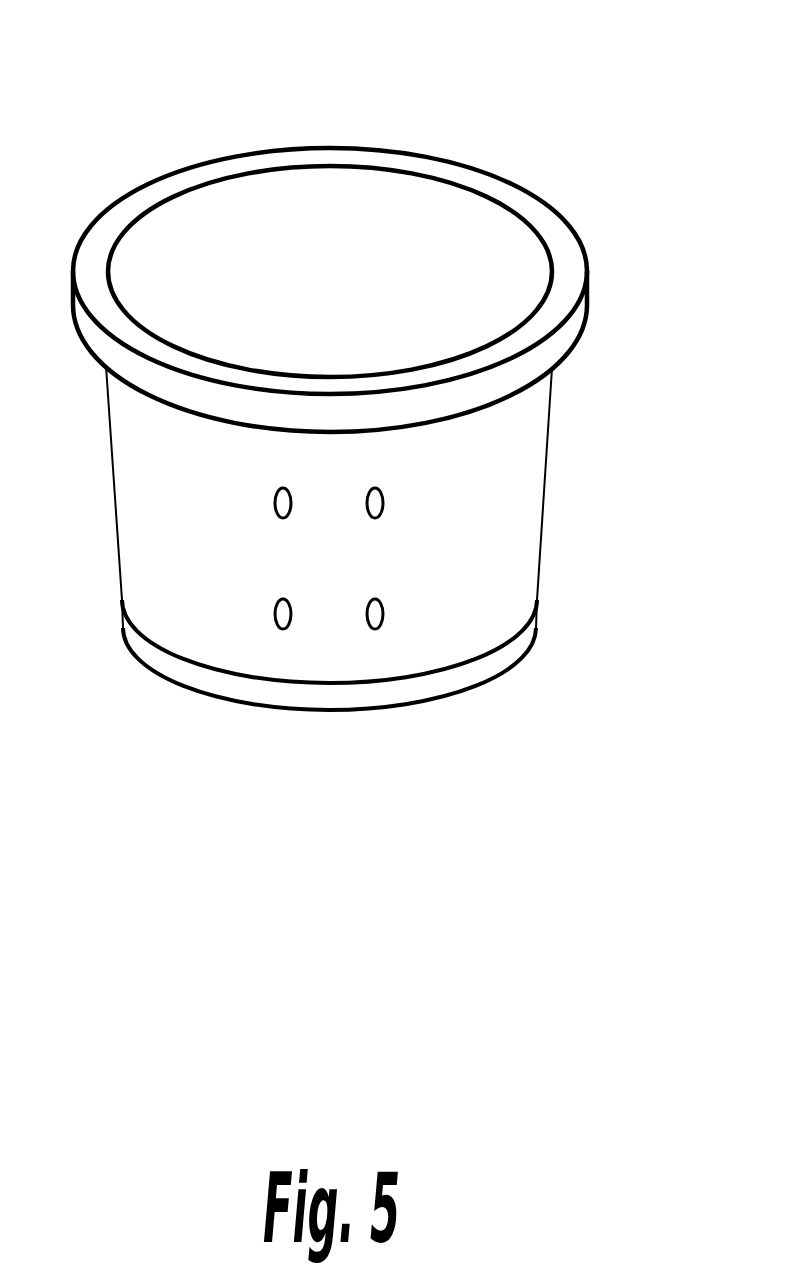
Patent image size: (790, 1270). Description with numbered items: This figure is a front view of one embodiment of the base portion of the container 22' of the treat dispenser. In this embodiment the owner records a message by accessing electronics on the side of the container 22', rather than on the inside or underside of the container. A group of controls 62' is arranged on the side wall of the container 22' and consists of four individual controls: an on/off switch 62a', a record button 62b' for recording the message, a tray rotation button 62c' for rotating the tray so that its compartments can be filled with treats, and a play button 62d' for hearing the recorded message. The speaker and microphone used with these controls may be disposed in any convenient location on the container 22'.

The container 22' is at (382, 429).
The controls 62' is at (239, 438).
The on/off switch 62a' is at (263, 259).
The record button 62b' is at (392, 259).
The tray rotation button 62c' is at (263, 738).
The play button 62d' is at (392, 738).